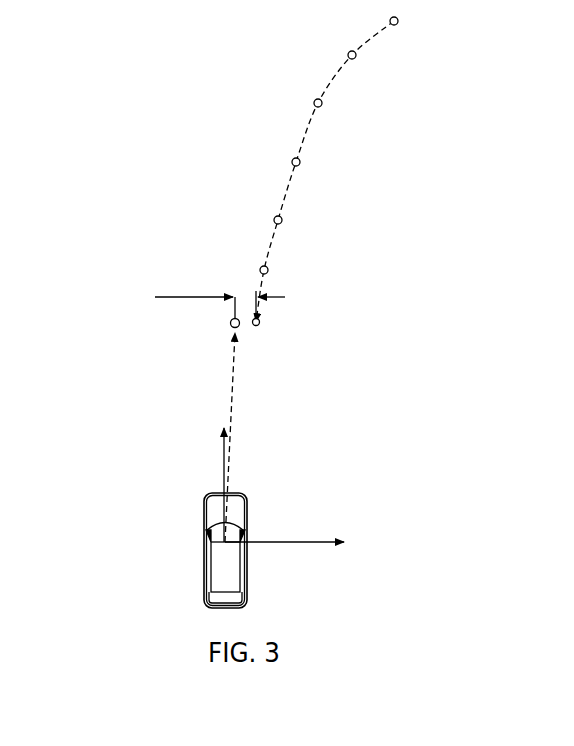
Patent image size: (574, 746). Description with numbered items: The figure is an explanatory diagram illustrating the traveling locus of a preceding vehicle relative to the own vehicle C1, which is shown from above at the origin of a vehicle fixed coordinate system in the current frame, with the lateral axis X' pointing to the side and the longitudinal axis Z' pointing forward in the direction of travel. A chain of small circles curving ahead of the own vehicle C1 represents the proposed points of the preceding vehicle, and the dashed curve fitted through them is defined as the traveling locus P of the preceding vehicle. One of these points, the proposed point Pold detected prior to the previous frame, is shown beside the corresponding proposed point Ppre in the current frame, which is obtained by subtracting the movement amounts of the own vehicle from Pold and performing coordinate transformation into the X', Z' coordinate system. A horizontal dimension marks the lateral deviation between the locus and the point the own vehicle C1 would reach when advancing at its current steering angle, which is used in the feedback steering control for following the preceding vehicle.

The traveling locus P is at (294, 137).
The proposed point Pold is at (288, 272).
The proposed point Ppre is at (282, 323).
The vehicle fixed coordinate system axis Z' is at (218, 431).
The vehicle fixed coordinate system axis X' is at (297, 544).
The own vehicle C1 is at (247, 578).